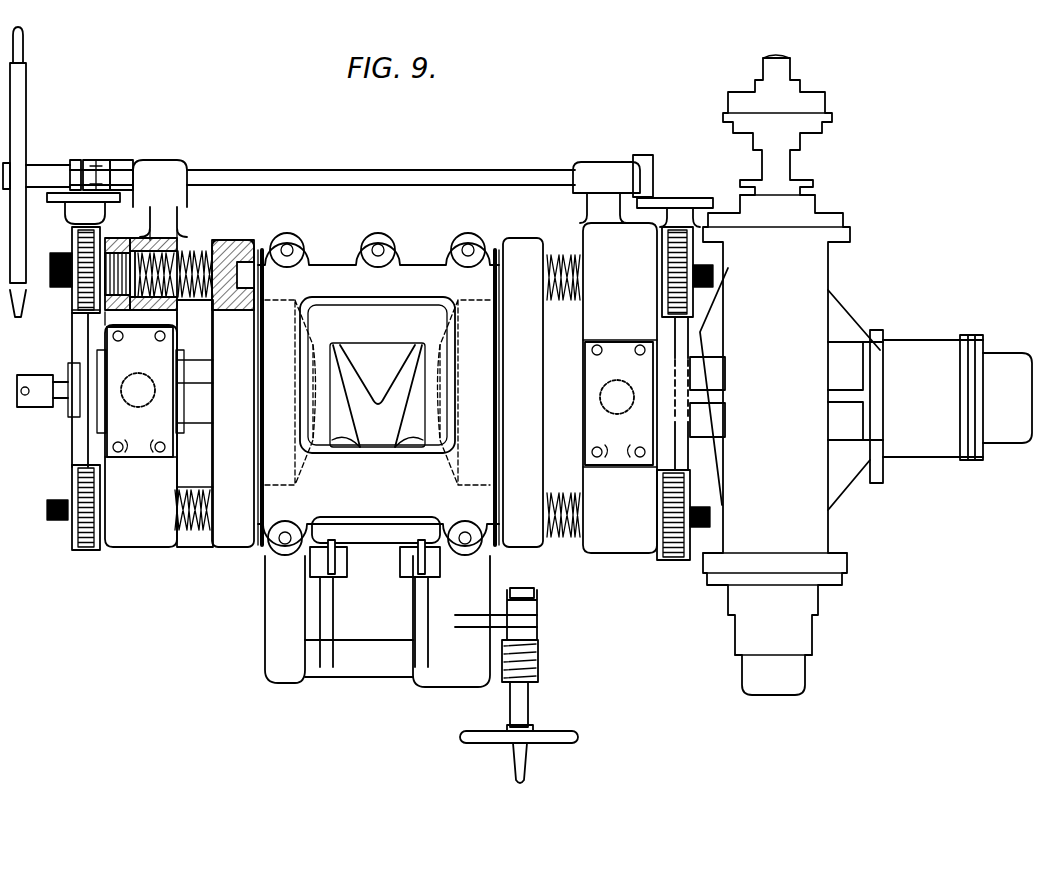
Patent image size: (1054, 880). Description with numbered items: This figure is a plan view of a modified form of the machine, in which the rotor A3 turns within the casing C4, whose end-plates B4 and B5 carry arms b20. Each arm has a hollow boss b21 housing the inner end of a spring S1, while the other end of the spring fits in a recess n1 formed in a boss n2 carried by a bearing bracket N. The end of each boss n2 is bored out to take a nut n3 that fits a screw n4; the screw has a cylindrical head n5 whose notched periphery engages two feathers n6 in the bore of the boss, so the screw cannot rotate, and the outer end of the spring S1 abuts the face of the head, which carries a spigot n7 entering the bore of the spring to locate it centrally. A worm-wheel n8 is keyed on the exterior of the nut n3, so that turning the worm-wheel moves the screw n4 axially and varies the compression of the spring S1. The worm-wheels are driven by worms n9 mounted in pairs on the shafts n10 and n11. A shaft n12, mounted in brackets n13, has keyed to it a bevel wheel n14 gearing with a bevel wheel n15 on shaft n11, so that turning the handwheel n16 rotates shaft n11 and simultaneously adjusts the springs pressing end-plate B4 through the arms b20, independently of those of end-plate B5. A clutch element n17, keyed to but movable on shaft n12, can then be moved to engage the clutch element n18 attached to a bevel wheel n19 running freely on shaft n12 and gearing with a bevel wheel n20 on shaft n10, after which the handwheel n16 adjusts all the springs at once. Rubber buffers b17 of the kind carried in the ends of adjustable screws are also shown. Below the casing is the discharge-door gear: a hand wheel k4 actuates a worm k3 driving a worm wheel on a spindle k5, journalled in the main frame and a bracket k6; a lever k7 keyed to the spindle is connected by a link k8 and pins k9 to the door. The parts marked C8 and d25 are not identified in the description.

The handwheel n16 is at (22, 80).
The shaft n12 is at (318, 172).
The clutch element n17 is at (75, 162).
The clutch element n18 is at (96, 162).
The bevel wheel n19 is at (122, 160).
The brackets n13 is at (158, 160).
The bevel wheel n20 is at (62, 204).
The worm-wheel n8 is at (72, 240).
The screw n4 is at (52, 272).
The nut n3 is at (118, 240).
The spigot n7 is at (168, 240).
The feathers n6 is at (176, 248).
The bosses n2 is at (153, 238).
The cylindrical head n5 is at (140, 330).
The recesses n1 is at (172, 330).
The bearing brackets N is at (141, 467).
The shaft n10 is at (72, 345).
The worms n9 is at (72, 315).
The arms b20 is at (225, 393).
The spring S1 is at (222, 300).
The hollow bosses b21 is at (238, 240).
The buffers b17 is at (265, 278).
The casing C4 is at (400, 268).
The lower roller C8 is at (285, 556).
The rotor A3 is at (373, 350).
The end-plate B5 is at (312, 340).
The end-plate B4 is at (440, 343).
The spindle k5 is at (264, 656).
The link k8 is at (330, 556).
The pins k9 is at (418, 563).
The lever k7 is at (333, 620).
The worm k3 is at (540, 660).
The bracket k6 is at (496, 690).
The hand wheel k4 is at (570, 730).
The bevel wheel n14 is at (645, 165).
The bevel wheel n15 is at (680, 200).
The shaft n11 is at (690, 355).
The housing d25 is at (828, 272).